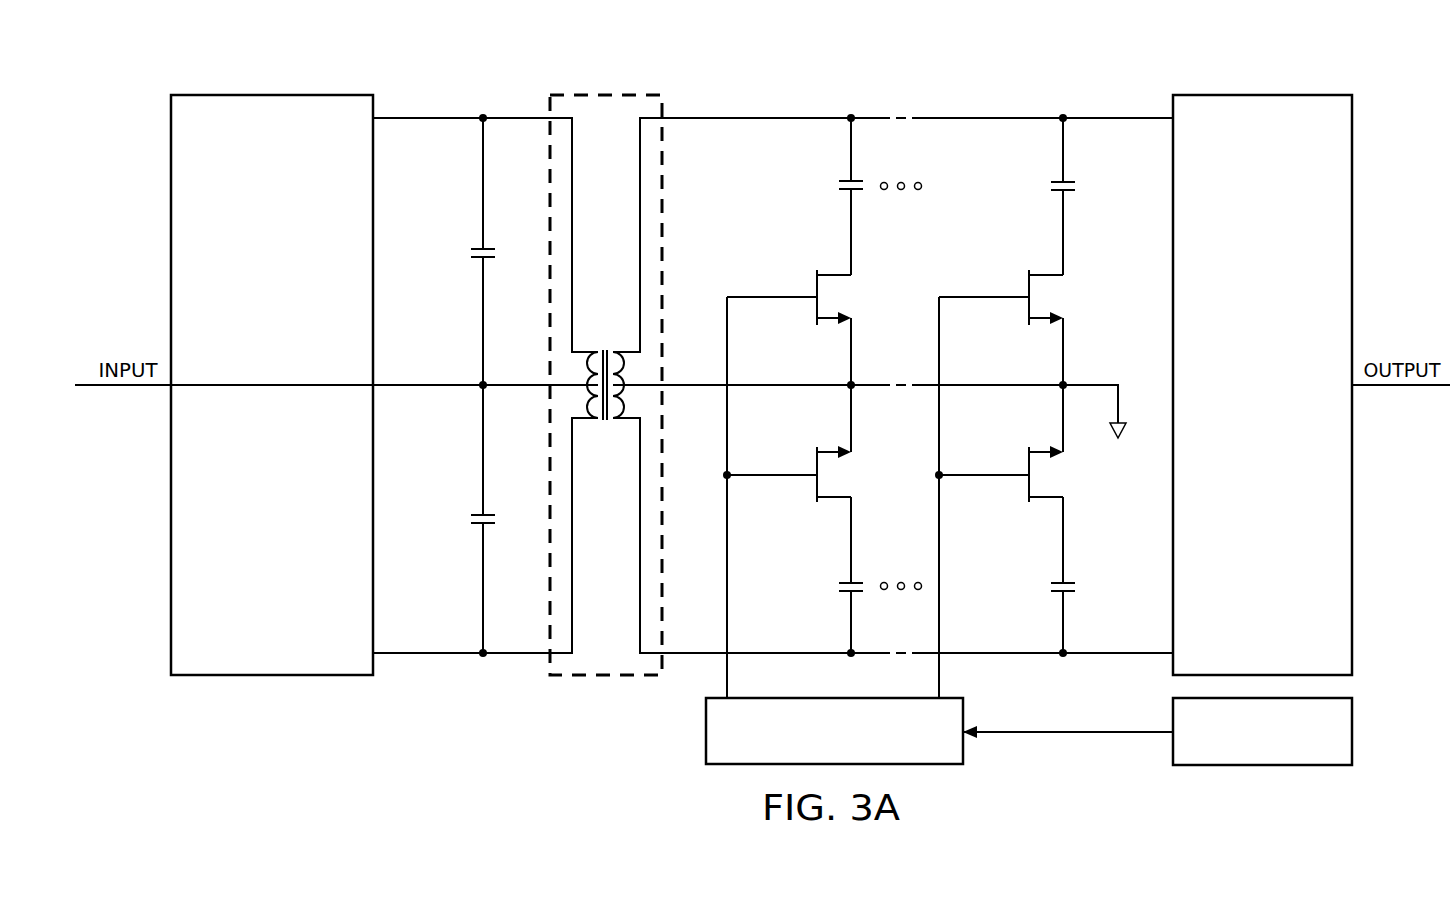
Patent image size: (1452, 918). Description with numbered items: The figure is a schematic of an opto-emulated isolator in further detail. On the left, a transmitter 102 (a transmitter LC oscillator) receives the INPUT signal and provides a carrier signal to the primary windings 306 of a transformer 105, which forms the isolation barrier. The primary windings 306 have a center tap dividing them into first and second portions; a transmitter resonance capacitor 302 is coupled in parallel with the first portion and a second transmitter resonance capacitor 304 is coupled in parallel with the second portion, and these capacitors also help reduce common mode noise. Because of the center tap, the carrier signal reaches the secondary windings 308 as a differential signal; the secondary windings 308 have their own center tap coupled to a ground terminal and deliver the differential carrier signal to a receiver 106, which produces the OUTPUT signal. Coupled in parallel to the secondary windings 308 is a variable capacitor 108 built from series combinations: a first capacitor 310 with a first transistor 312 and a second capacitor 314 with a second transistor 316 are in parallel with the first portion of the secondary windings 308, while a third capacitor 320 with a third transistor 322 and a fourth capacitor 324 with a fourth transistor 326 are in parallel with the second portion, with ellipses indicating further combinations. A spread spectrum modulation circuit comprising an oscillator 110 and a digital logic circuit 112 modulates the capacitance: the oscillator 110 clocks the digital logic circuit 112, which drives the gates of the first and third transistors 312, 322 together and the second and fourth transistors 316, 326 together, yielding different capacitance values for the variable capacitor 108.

The transmitter 102 is at (252, 432).
The transformer 105 is at (606, 353).
The receiver 106 is at (1285, 416).
The variable capacitor 108 is at (974, 100).
The oscillator 110 is at (1353, 744).
The digital logic circuit 112 is at (705, 744).
The transmitter resonance capacitor 302 is at (470, 252).
The transmitter resonance capacitor 304 is at (470, 519).
The primary windings 306 is at (584, 350).
The secondary windings 308 is at (628, 421).
The first capacitor 310 is at (838, 188).
The first transistor 312 is at (815, 288).
The second capacitor 314 is at (1076, 186).
The second transistor 316 is at (1027, 288).
The third capacitor 320 is at (838, 585).
The third transistor 322 is at (815, 485).
The fourth capacitor 324 is at (1076, 586).
The fourth transistor 326 is at (1027, 485).